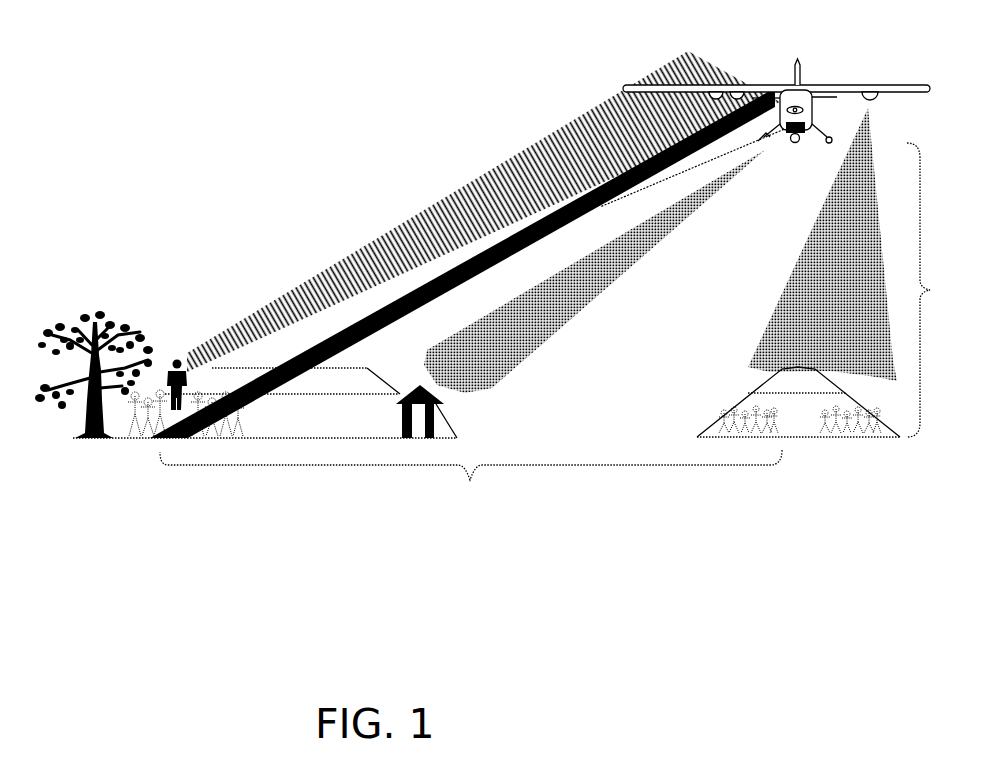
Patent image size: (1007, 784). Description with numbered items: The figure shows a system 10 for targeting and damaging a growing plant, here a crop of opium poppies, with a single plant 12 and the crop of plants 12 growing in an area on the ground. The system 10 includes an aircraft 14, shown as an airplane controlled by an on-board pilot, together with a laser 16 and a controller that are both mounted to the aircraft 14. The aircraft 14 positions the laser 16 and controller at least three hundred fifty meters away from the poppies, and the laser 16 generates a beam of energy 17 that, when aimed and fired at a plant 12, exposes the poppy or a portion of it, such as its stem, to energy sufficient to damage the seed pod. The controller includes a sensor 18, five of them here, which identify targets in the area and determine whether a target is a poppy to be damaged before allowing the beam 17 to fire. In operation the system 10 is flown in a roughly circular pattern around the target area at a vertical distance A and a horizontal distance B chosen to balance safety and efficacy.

The system 10 is at (779, 110).
The plant 12 is at (139, 421).
The aircraft 14 is at (776, 69).
The laser 16 is at (805, 85).
The beam of energy 17 is at (740, 53).
The sensor 18 is at (782, 113).
The vertical distance A is at (928, 290).
The horizontal distance B is at (471, 481).